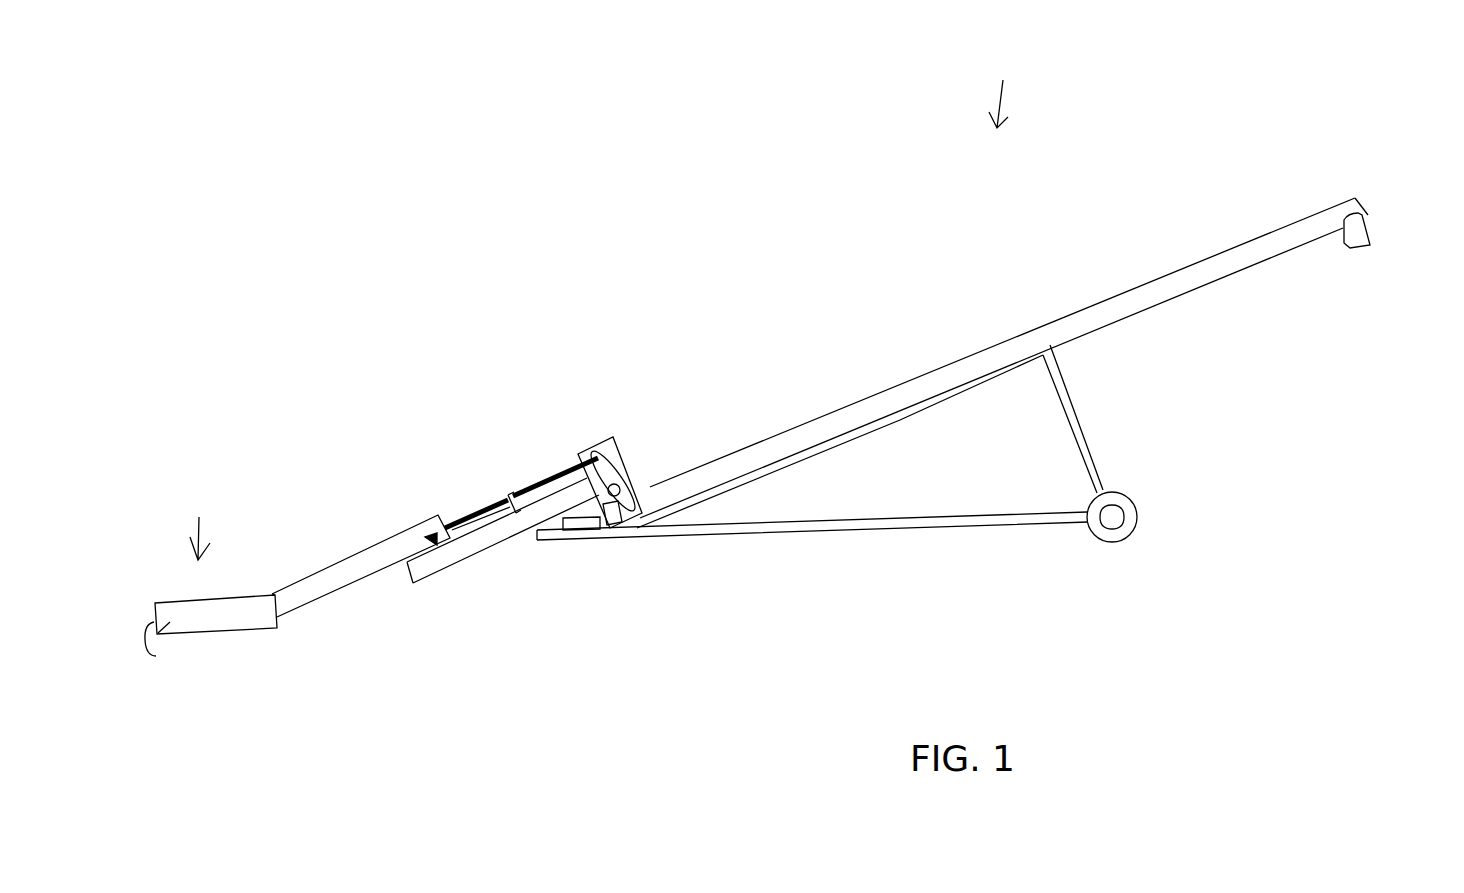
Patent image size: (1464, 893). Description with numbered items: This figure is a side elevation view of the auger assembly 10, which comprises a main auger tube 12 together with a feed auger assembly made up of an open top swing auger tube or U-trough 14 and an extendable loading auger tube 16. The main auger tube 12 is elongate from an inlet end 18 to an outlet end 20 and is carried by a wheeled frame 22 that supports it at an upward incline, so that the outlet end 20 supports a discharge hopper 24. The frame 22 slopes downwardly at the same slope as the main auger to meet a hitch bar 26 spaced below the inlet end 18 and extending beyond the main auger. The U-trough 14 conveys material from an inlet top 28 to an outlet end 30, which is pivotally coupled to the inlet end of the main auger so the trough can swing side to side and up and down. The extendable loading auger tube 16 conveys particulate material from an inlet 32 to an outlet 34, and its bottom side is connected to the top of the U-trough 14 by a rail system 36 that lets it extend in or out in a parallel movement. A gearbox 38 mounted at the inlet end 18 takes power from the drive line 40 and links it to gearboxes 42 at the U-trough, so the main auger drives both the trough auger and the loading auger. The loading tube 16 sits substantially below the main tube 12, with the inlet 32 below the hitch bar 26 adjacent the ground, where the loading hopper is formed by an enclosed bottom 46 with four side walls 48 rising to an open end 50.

The auger assembly 10 is at (1005, 80).
The main auger tube 12 is at (1222, 255).
The open top swing auger tube or U-trough 14 is at (515, 532).
The extendable loading auger tube 16 is at (343, 568).
The inlet end 18 is at (651, 490).
The outlet end 20 is at (1325, 207).
The wheeled frame 22 is at (1082, 421).
The discharge hopper 24 is at (1374, 234).
The hitch bar 26 is at (553, 542).
The inlet top 28 is at (519, 488).
The outlet end 30 is at (655, 478).
The inlet 32 is at (288, 600).
The outlet 34 is at (441, 522).
The rail system 36 is at (483, 527).
The gearbox 38 is at (637, 530).
The drive line 40 is at (600, 527).
The gearboxes 42 is at (622, 478).
The enclosed bottom 46 is at (208, 635).
The side walls 48 is at (154, 657).
The open end 50 is at (214, 515).